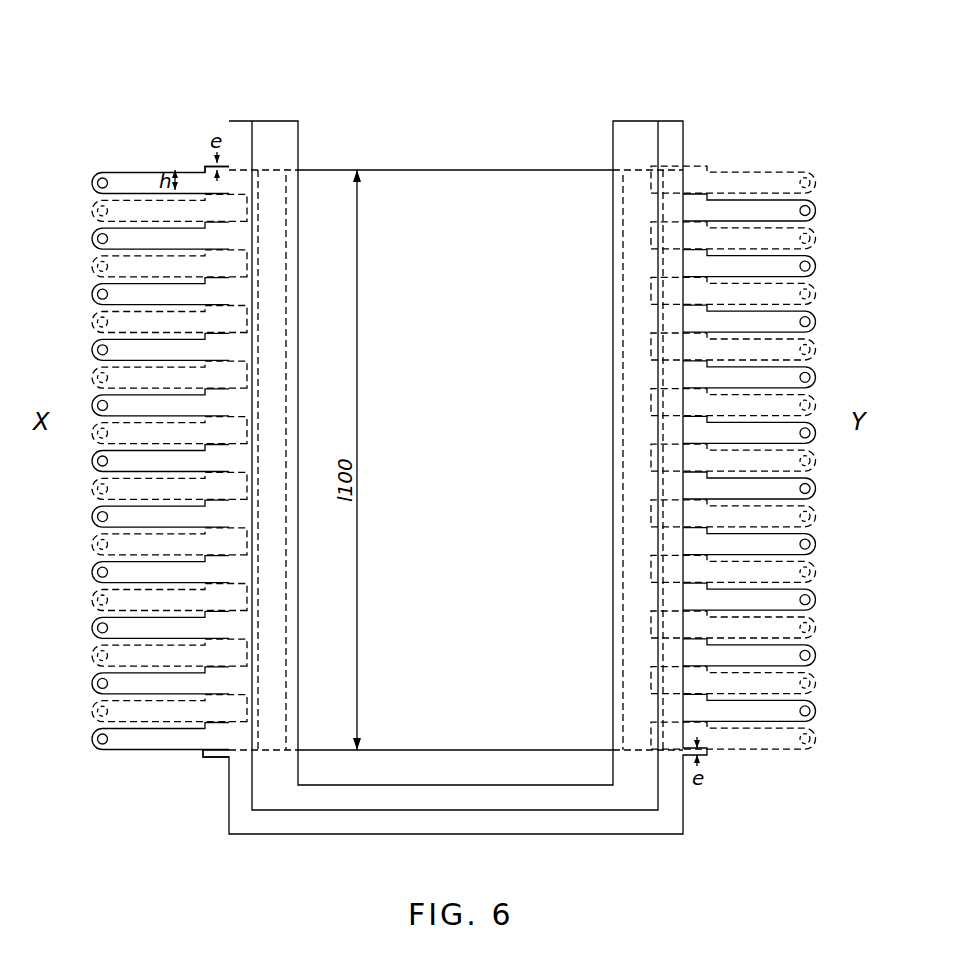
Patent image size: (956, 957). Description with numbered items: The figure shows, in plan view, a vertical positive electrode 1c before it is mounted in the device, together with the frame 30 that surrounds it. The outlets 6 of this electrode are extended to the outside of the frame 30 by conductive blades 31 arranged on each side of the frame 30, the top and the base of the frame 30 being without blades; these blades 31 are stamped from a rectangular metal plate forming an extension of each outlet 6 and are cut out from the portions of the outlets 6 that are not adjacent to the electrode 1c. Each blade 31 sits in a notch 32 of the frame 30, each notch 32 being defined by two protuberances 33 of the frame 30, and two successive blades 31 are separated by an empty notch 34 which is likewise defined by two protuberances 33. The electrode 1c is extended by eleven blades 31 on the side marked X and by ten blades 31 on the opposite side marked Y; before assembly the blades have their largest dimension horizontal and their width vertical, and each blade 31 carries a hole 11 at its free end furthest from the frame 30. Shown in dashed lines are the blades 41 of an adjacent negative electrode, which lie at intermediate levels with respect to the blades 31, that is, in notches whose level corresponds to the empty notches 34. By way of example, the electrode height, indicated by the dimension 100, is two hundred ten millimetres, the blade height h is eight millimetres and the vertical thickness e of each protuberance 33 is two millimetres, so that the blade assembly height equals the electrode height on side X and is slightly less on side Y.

The positive electrode 1c is at (457, 170).
The outlets 6 is at (285, 162).
The hole 11 is at (96, 172).
The frame 30 is at (655, 121).
The conductive blades 31 is at (126, 171).
The notch 32 is at (218, 178).
The protuberances 33 is at (217, 758).
The empty notch 34 is at (216, 209).
The blades of negative electrode 41 is at (97, 216).
The printed circuit card 100 is at (288, 270).